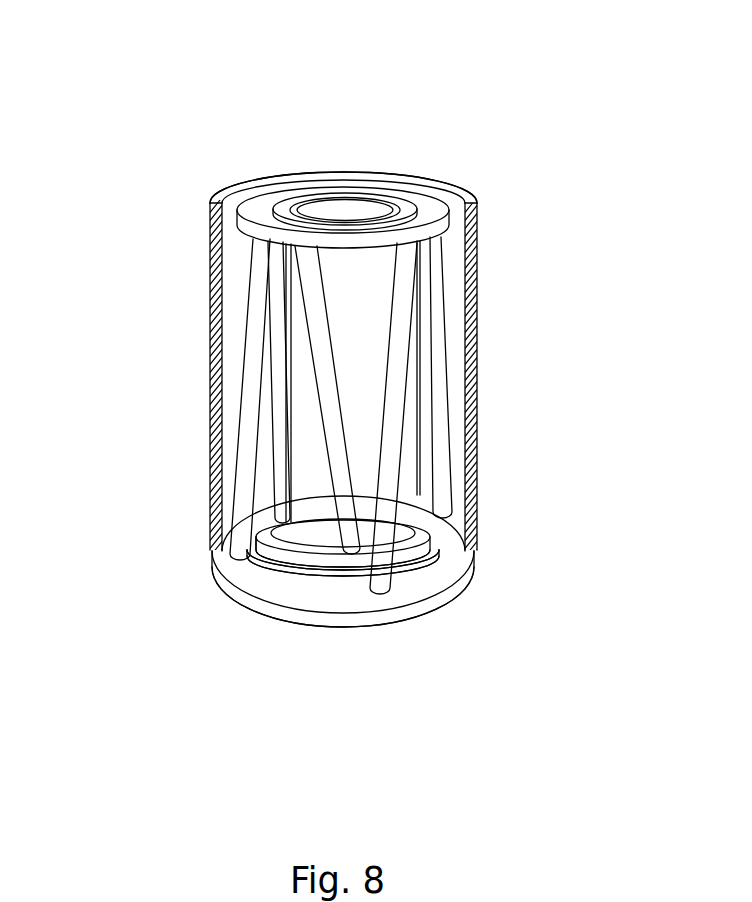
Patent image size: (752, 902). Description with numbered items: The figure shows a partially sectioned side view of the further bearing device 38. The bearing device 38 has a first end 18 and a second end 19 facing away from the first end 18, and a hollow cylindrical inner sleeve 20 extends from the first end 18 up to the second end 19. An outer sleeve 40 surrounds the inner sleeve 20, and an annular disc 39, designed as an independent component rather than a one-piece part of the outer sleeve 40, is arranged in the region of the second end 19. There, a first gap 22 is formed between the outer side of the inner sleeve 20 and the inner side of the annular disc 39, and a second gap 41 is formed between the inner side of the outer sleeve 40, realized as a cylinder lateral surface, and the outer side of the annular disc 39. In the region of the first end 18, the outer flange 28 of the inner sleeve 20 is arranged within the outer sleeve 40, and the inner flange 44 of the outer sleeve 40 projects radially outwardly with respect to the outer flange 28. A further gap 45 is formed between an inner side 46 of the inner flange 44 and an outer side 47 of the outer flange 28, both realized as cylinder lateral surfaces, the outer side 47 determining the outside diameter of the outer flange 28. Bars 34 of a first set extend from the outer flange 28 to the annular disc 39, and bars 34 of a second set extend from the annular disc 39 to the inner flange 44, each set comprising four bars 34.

The first end 18 is at (471, 598).
The second end 19 is at (197, 203).
The inner sleeve 20 is at (352, 215).
The first gap 22 is at (289, 195).
The outer flange 28 is at (428, 527).
The bars 34 is at (430, 293).
The bearing device 38 is at (533, 117).
The annular disc 39 is at (435, 207).
The outer sleeve 40 is at (478, 349).
The second gap 41 is at (234, 196).
The inner flange 44 is at (253, 580).
The further gap 45 is at (304, 578).
The inner side of the inner flange 46 is at (328, 584).
The outer side of the outer flange 47 is at (293, 558).